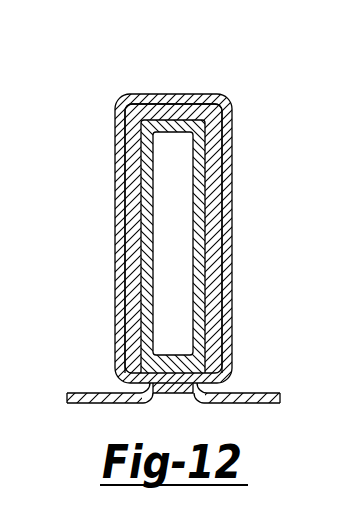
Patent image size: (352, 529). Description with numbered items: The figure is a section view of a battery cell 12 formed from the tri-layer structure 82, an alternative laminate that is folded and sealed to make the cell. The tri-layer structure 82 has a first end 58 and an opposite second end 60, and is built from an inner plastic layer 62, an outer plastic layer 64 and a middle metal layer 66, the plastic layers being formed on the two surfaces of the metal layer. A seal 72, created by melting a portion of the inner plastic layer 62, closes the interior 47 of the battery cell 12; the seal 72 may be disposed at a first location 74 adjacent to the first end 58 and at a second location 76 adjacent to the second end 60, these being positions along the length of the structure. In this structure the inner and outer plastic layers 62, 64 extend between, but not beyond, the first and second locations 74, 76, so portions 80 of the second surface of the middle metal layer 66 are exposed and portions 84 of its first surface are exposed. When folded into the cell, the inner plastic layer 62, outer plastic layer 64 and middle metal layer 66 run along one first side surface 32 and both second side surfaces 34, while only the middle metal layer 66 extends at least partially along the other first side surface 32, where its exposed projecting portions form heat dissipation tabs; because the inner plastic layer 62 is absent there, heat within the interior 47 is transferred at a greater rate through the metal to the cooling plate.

The battery cell 12 is at (95, 68).
The tri-layer structure 82 is at (173, 388).
The first side surface 32 is at (169, 95).
The second side surface 34 is at (232, 197).
The interior 47 is at (180, 157).
The inner plastic layer 62 is at (147, 152).
The outer plastic layer 64 is at (117, 190).
The middle metal layer 66 is at (130, 255).
The seal 72 is at (177, 345).
The first location 74 is at (122, 346).
The second location 76 is at (228, 346).
The first end 58 is at (67, 394).
The second end 60 is at (281, 394).
The exposed portions of second surface 80 is at (80, 393).
The exposed portions of first surface 84 is at (75, 403).